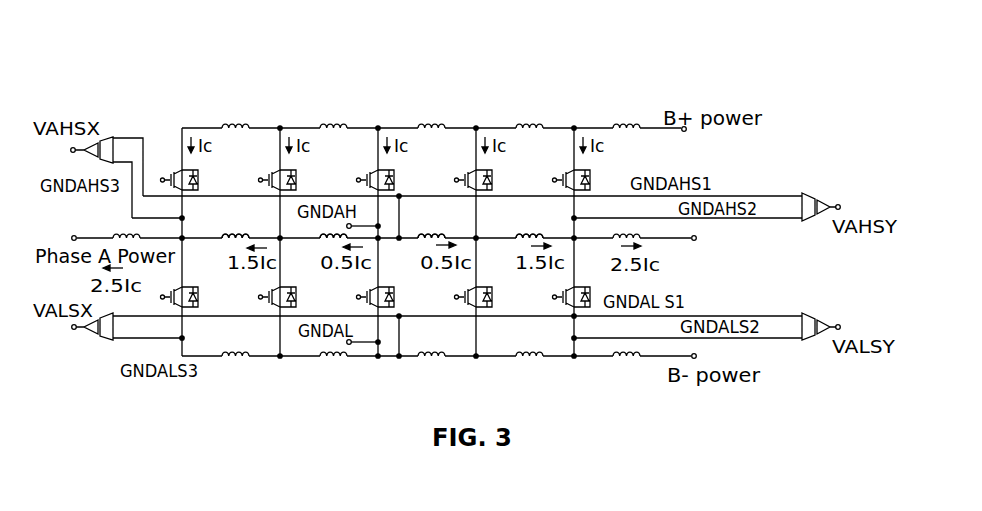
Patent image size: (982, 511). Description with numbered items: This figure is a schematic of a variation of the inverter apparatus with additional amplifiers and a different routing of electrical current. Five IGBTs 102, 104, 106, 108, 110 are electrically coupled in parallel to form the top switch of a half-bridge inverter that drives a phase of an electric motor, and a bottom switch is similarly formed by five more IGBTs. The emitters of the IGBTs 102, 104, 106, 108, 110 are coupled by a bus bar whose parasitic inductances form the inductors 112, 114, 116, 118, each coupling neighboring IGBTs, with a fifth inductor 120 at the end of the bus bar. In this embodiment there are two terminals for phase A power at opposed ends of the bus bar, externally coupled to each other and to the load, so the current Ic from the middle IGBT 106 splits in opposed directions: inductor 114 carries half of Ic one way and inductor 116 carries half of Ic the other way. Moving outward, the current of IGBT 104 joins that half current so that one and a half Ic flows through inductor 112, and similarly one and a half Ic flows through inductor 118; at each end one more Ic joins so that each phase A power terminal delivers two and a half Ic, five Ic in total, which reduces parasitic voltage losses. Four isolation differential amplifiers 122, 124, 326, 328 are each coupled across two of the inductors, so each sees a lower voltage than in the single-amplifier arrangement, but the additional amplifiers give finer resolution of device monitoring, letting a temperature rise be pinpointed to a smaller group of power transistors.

The IGBT 102 is at (569, 172).
The IGBT 104 is at (471, 172).
The IGBT 106 is at (373, 172).
The IGBT 108 is at (275, 172).
The IGBT 110 is at (178, 168).
The inductor 112 is at (525, 244).
The inductor 114 is at (427, 244).
The inductor 116 is at (328, 244).
The inductor 118 is at (232, 244).
The fifth inductor 120 is at (117, 233).
The isolation differential amplifier 122 is at (803, 192).
The isolation differential amplifier 124 is at (803, 312).
The isolation differential amplifier 326 is at (128, 137).
The isolation differential amplifier 328 is at (108, 342).